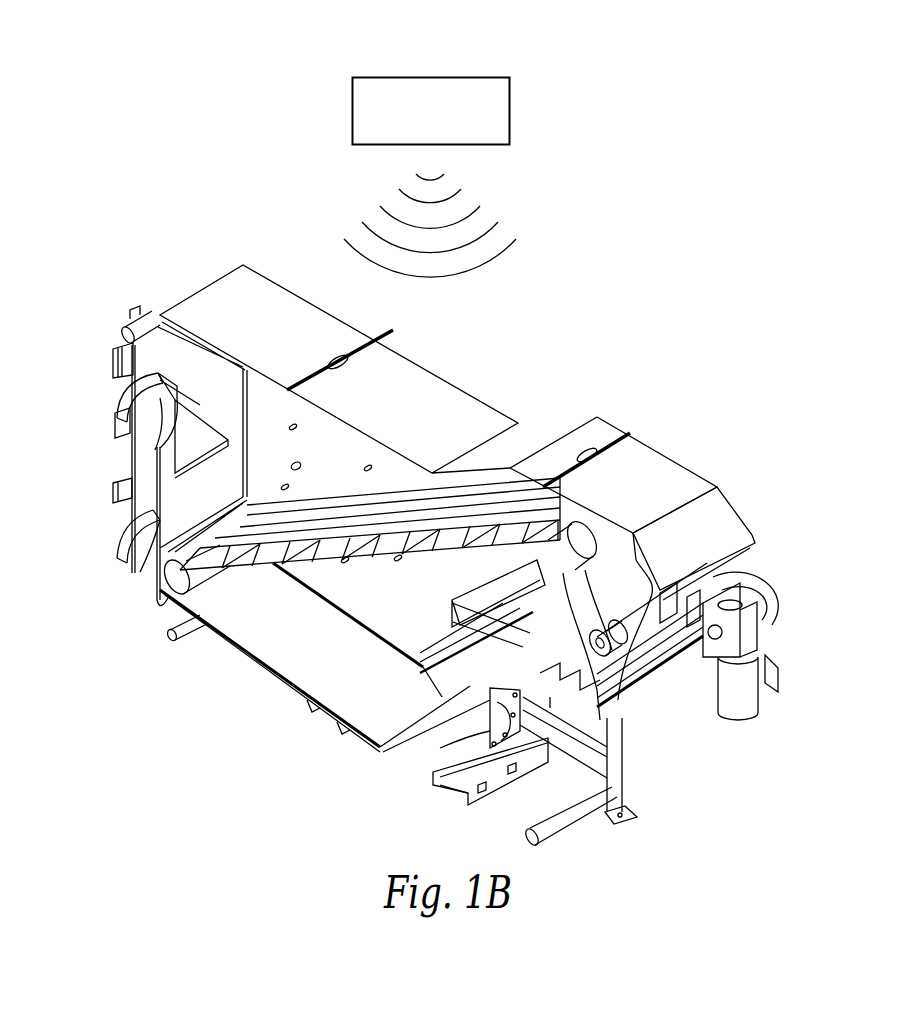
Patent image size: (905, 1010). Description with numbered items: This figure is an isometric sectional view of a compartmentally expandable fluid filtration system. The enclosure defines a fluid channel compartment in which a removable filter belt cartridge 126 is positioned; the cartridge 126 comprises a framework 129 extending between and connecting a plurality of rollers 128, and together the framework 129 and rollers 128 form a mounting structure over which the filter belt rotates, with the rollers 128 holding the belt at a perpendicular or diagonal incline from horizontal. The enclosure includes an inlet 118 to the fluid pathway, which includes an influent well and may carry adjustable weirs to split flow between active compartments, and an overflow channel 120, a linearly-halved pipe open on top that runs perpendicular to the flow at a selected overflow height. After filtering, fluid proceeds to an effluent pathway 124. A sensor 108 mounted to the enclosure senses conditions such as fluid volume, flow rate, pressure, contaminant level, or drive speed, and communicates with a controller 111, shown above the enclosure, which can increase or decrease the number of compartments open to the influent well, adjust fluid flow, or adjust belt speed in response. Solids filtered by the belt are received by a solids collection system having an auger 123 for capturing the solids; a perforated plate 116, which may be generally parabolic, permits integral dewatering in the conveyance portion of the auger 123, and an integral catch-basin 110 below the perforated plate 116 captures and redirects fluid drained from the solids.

The controller 111 is at (433, 77).
The sensor 108 is at (280, 448).
The inlet 118 is at (112, 385).
The overflow channel 120 is at (112, 530).
The framework 129 is at (385, 520).
The rollers 128 is at (175, 583).
The filter belt cartridge 126 is at (238, 595).
The auger 123 is at (605, 628).
The perforated plate 116 is at (623, 707).
The effluent pathway 124 is at (483, 717).
The catch-basin 110 is at (623, 720).